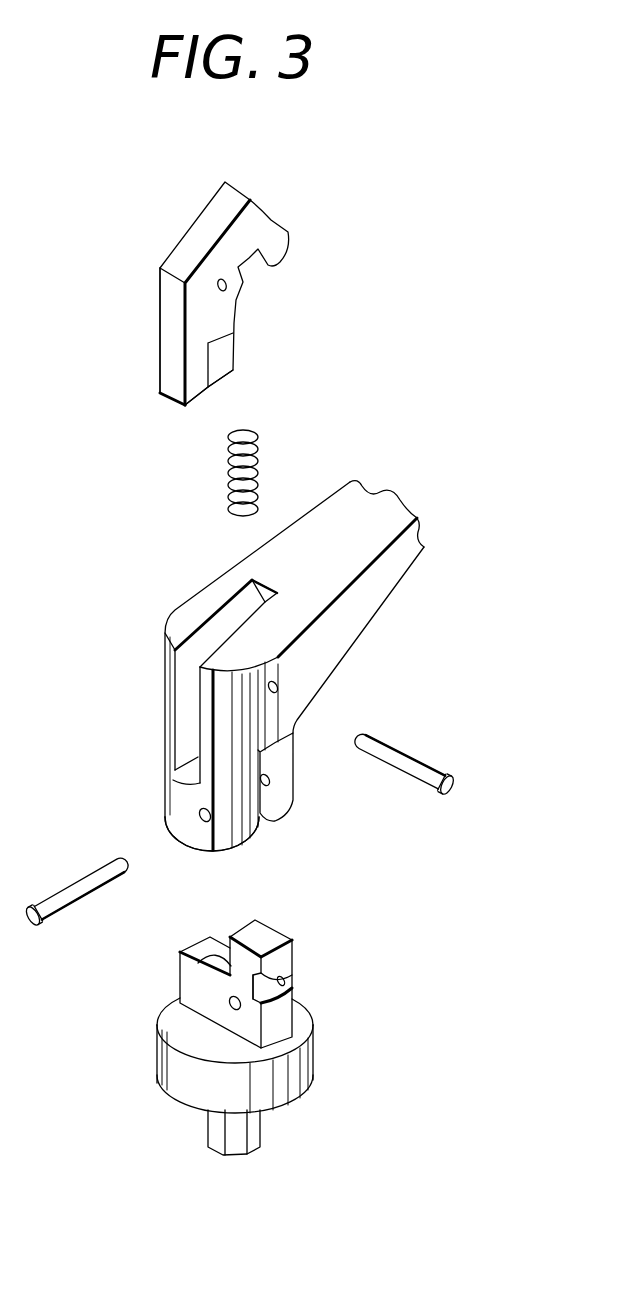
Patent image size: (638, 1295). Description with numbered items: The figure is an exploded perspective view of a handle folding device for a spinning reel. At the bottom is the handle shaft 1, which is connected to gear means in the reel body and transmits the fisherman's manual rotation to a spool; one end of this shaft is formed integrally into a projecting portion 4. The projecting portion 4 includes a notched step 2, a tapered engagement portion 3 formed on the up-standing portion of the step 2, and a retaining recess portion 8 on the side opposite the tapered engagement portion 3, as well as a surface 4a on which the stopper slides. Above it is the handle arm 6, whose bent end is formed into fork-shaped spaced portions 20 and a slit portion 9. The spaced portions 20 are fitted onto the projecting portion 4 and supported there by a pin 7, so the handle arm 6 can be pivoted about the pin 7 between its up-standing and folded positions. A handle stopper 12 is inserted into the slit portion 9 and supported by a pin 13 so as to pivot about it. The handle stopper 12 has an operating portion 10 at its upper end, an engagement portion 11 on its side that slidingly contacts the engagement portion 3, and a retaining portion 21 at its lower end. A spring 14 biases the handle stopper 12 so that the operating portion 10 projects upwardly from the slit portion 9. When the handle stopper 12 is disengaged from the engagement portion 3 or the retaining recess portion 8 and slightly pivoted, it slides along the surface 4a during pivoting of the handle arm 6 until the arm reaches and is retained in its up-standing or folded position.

The handle shaft 1 is at (242, 1135).
The notched step 2 is at (203, 950).
The tapered engagement portion 3 is at (193, 967).
The projecting portion 4 is at (280, 1015).
The surface of projecting portion 4a is at (198, 1012).
The handle arm 6 is at (388, 575).
The pin 7 is at (62, 893).
The retaining recess portion 8 is at (282, 980).
The slit portion 9 is at (187, 675).
The operating portion 10 is at (252, 198).
The engagement portion 11 is at (223, 356).
The handle stopper 12 is at (167, 313).
The pin 13 is at (383, 742).
The spring 14 is at (263, 453).
The spaced portions 20 is at (178, 807).
The retaining portion 21 is at (203, 398).